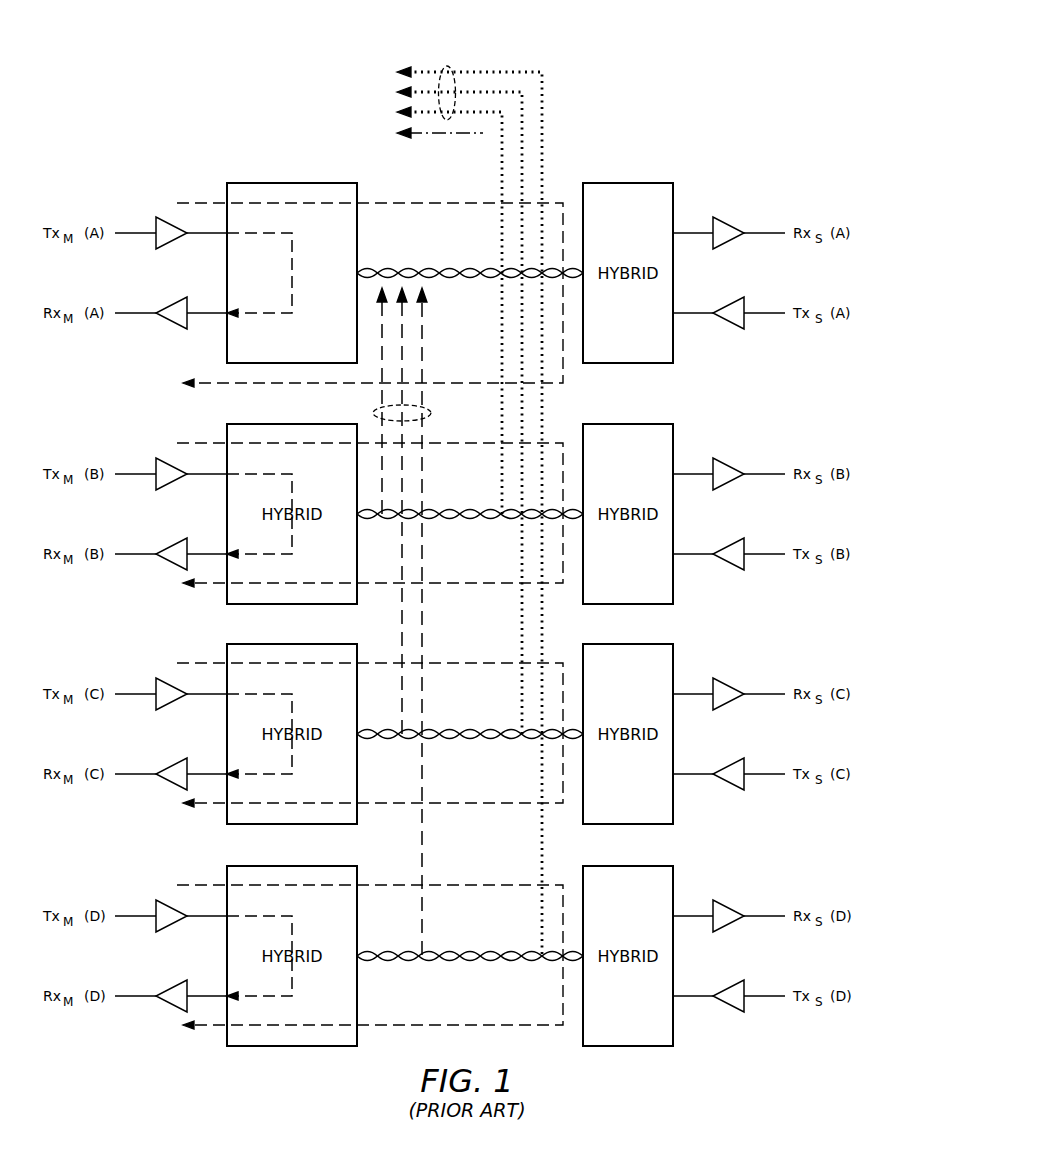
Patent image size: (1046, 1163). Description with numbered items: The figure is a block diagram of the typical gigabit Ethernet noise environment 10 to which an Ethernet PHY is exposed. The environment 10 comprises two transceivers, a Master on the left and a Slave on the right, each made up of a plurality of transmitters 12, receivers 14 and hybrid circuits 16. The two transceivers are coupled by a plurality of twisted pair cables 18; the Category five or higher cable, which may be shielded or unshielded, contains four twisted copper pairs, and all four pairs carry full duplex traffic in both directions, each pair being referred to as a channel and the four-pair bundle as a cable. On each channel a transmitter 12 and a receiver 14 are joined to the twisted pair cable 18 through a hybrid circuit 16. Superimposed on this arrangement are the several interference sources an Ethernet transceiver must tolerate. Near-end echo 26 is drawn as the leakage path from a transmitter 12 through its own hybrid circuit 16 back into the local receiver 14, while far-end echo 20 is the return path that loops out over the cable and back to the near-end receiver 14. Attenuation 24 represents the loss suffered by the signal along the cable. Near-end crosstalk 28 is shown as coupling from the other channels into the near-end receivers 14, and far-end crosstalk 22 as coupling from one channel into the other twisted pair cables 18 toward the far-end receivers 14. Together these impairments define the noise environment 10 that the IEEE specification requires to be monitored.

The noise environment 10 is at (643, 70).
The transmitter 12 is at (172, 240).
The receiver 14 is at (165, 304).
The hybrid circuit 16 is at (284, 183).
The twisted pair cable 18 is at (421, 266).
The far-end echo 20 is at (200, 203).
The far-end crosstalk 22 is at (447, 66).
The attenuation 24 is at (452, 136).
The near-end echo 26 is at (294, 238).
The near-end crosstalk 28 is at (432, 413).